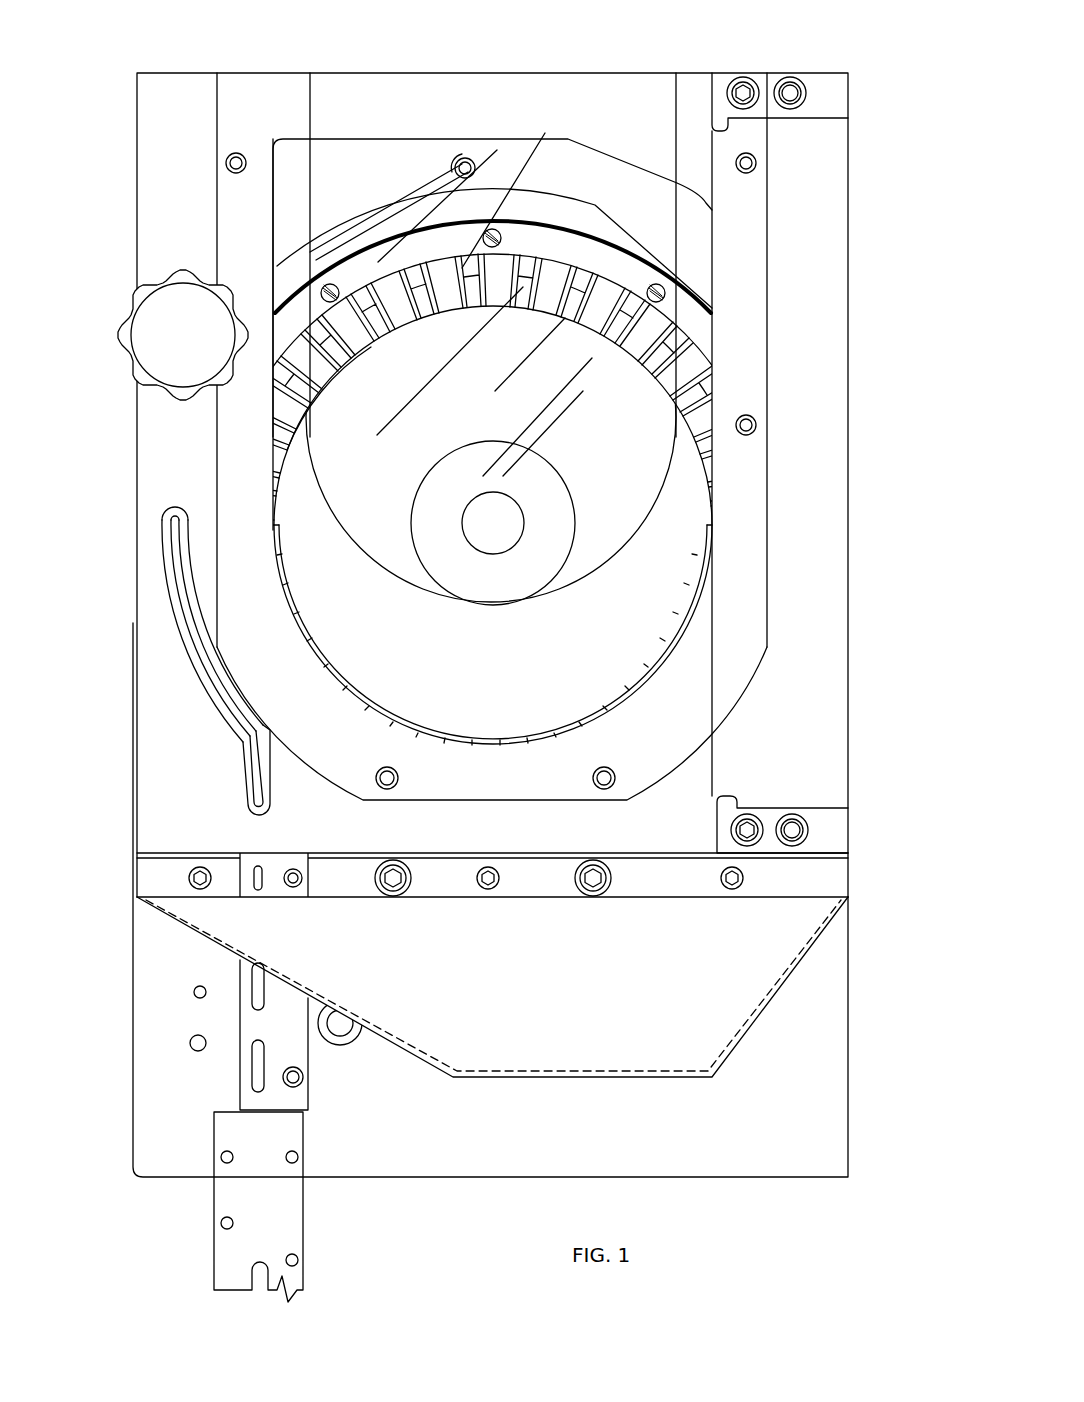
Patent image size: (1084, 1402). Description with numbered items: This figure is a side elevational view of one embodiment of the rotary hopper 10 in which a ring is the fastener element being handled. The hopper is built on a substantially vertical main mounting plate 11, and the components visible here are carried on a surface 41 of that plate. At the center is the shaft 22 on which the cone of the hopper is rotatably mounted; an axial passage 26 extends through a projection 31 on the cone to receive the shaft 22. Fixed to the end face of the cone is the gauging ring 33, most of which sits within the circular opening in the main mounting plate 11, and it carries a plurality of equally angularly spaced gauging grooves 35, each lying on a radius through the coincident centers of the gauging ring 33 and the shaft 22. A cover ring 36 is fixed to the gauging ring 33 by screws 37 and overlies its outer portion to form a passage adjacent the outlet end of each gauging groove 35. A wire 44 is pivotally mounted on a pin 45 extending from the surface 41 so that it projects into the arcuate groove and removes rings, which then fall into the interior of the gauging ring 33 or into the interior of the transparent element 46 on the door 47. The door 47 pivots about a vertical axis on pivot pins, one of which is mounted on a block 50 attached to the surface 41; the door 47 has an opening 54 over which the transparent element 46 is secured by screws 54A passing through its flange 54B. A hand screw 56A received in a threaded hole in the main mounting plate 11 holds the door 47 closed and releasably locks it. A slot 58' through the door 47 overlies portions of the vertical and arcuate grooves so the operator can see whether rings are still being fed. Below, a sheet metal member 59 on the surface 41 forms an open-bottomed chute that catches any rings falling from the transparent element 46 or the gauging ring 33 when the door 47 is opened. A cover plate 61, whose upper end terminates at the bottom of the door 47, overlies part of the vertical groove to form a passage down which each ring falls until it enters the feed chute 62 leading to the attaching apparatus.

The rotary hopper 10 is at (862, 657).
The main mounting plate 11 is at (519, 900).
The shaft 22 is at (510, 520).
The axial passage 26 is at (497, 535).
The projection 31 is at (415, 575).
The gauging ring 33 is at (649, 374).
The gauging grooves 35 is at (422, 305).
The cover ring 36 is at (550, 245).
The screws 37 is at (648, 288).
The surface 41 is at (792, 1137).
The wire 44 is at (372, 226).
The pin 45 is at (470, 157).
The transparent element 46 is at (692, 710).
The door 47 is at (533, 855).
The block 50 is at (810, 120).
The opening 54 is at (362, 165).
The screws 54A is at (755, 415).
The flange 54B is at (737, 325).
The hand screw 56A is at (130, 303).
The slot 58' is at (169, 618).
The sheet metal member 59 is at (750, 1027).
The cover plate 61 is at (308, 1066).
The feed chute 62 is at (305, 1145).